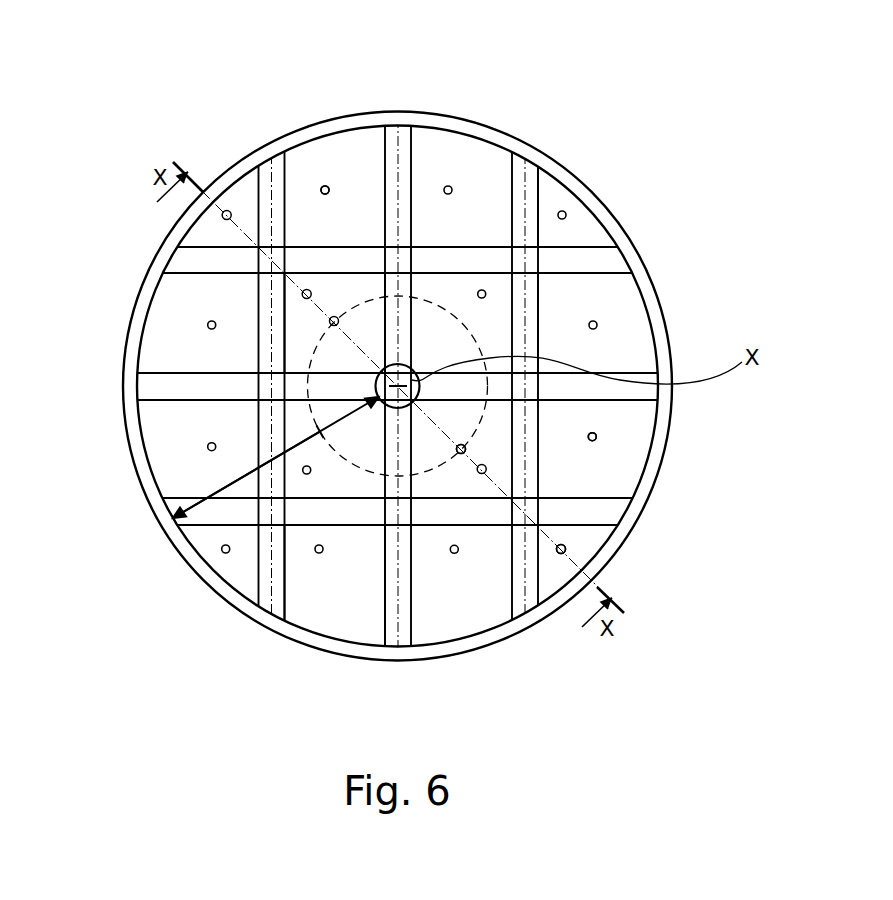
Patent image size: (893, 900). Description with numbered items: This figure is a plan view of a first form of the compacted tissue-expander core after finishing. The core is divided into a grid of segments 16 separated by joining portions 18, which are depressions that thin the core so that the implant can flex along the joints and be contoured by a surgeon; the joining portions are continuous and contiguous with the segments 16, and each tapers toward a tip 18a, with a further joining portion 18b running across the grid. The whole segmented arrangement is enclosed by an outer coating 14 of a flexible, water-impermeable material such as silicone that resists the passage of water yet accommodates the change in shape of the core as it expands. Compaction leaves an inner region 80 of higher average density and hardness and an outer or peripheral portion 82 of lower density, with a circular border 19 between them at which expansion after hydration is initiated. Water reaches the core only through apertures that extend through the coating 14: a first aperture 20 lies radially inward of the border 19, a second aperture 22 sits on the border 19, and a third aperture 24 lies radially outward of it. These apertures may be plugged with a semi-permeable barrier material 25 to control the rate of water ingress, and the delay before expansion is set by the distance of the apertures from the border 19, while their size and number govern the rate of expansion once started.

The outer coating 14 is at (663, 327).
The segment 16 is at (575, 220).
The joining portion 18 is at (403, 145).
The tip 18a is at (265, 177).
The horizontal grid strip 18b is at (190, 262).
The border 19 is at (450, 305).
The first aperture 20 is at (410, 405).
The second aperture 22 is at (331, 323).
The third aperture 24 is at (324, 186).
The semi-permeable barrier material 25 is at (322, 188).
The inner region 80 is at (358, 420).
The outer or peripheral portion 82 is at (250, 473).